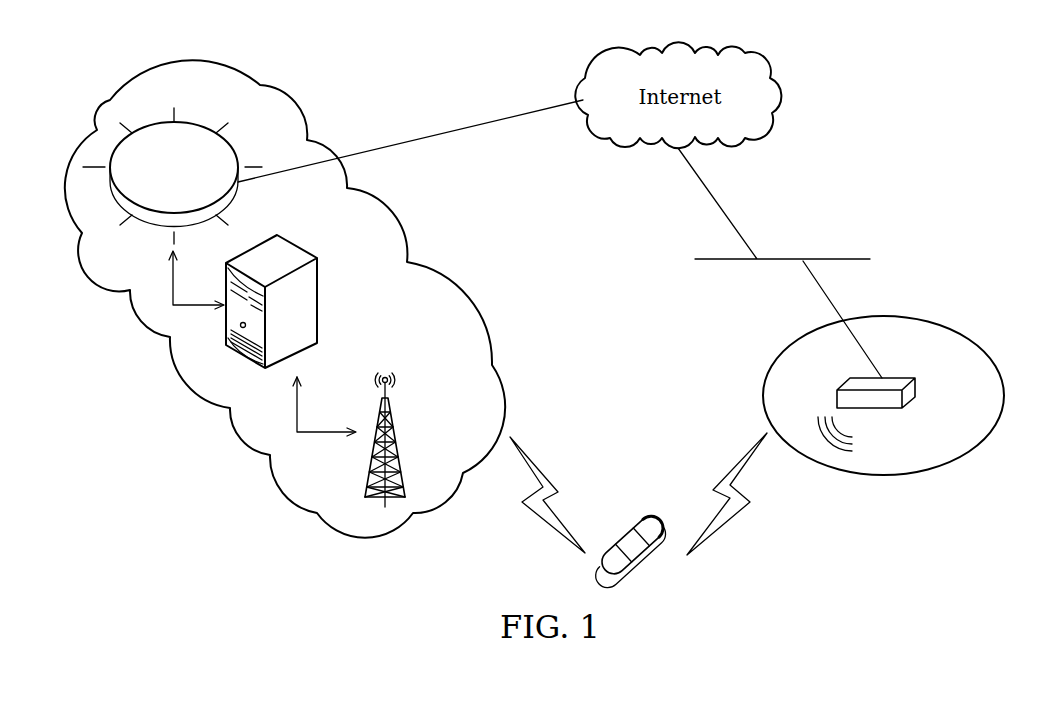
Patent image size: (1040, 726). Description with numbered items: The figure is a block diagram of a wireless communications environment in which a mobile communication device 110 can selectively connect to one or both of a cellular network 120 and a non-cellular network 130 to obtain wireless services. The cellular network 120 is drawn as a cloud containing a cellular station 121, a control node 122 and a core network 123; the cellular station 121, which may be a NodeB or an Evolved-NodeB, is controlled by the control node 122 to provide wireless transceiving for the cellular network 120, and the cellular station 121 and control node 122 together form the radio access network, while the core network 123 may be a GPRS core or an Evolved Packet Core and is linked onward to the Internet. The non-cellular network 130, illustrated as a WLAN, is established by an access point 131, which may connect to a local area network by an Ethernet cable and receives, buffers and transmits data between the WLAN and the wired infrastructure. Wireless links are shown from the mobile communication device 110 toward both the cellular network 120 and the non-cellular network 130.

The mobile communication device 110 is at (652, 517).
The cellular network 120 is at (112, 102).
The cellular station 121 is at (399, 437).
The control node 122 is at (318, 293).
The core network 123 is at (234, 141).
The non-cellular network 130 is at (966, 338).
The access point 131 is at (915, 380).